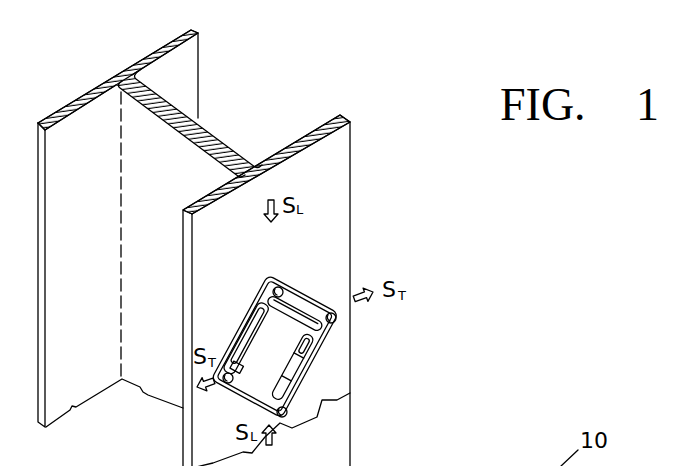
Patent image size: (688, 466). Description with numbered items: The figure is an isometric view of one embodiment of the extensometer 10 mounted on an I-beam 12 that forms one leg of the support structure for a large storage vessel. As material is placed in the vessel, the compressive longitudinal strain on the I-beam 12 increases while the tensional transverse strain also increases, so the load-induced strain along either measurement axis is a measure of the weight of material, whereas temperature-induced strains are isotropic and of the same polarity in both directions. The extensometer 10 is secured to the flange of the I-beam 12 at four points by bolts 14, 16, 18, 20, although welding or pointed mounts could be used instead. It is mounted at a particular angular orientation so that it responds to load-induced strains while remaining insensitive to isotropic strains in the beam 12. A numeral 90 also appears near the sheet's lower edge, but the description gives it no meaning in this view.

The extensometer 10 is at (303, 349).
The I-beam 12 is at (343, 182).
The bolt 14 is at (281, 287).
The bolt 16 is at (337, 319).
The bolt 18 is at (284, 417).
The bolt 20 is at (234, 389).
The device (adjacent figure) 90 is at (506, 458).